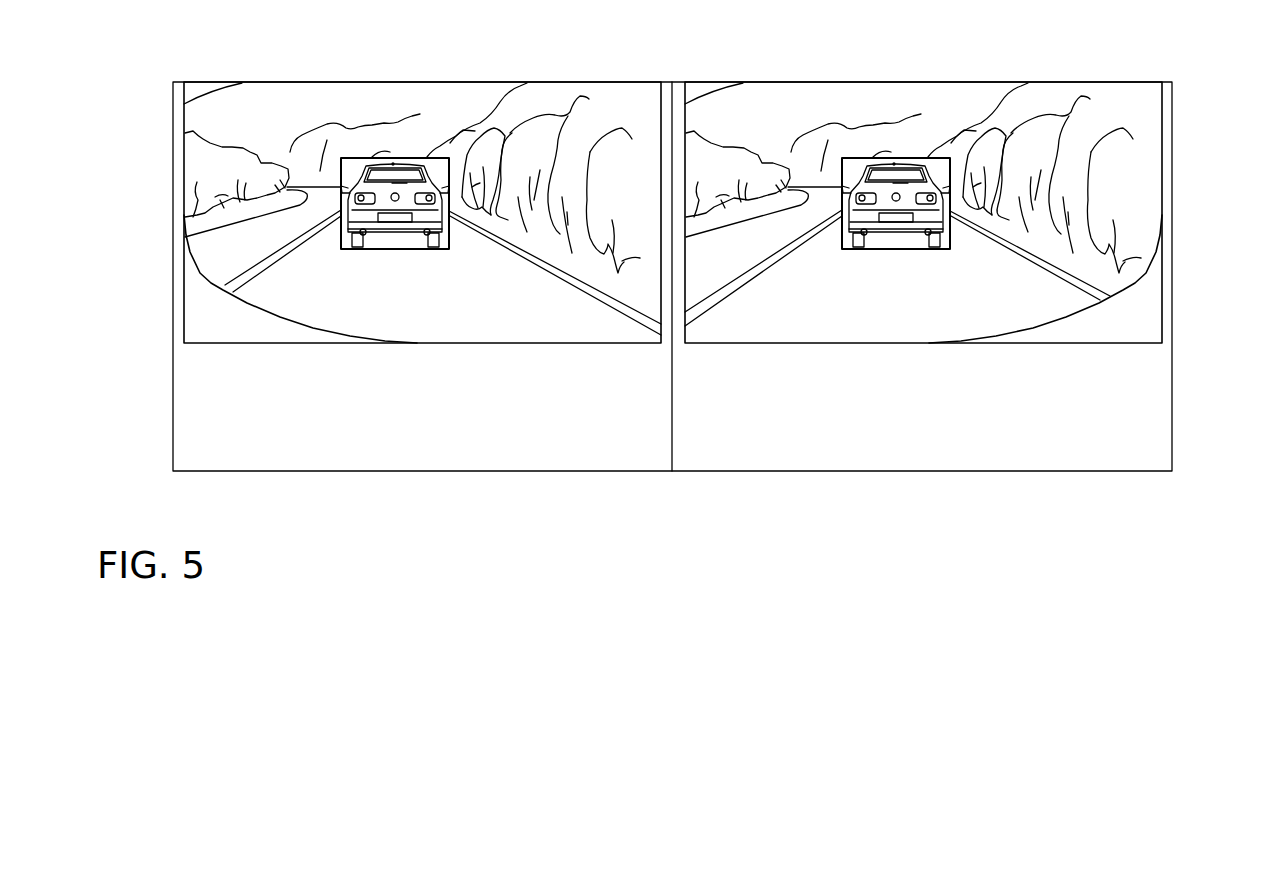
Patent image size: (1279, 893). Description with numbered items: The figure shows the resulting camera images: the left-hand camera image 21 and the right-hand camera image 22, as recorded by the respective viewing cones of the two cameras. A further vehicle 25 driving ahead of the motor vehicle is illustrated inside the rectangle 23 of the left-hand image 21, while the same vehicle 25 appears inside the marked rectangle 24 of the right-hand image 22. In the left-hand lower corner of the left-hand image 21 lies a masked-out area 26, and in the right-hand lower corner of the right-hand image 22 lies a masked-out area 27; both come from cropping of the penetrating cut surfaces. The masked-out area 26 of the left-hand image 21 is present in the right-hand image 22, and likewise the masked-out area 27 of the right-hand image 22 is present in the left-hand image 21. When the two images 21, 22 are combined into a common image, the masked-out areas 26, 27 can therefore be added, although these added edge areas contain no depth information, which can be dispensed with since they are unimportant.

The left-hand camera image 21 is at (218, 253).
The right-hand camera image 22 is at (1150, 217).
The rectangle 23 is at (403, 158).
The marked rectangle 24 is at (904, 158).
The further vehicle 25 is at (407, 197).
The masked-out area 26 is at (218, 325).
The masked-out area 27 is at (1108, 326).